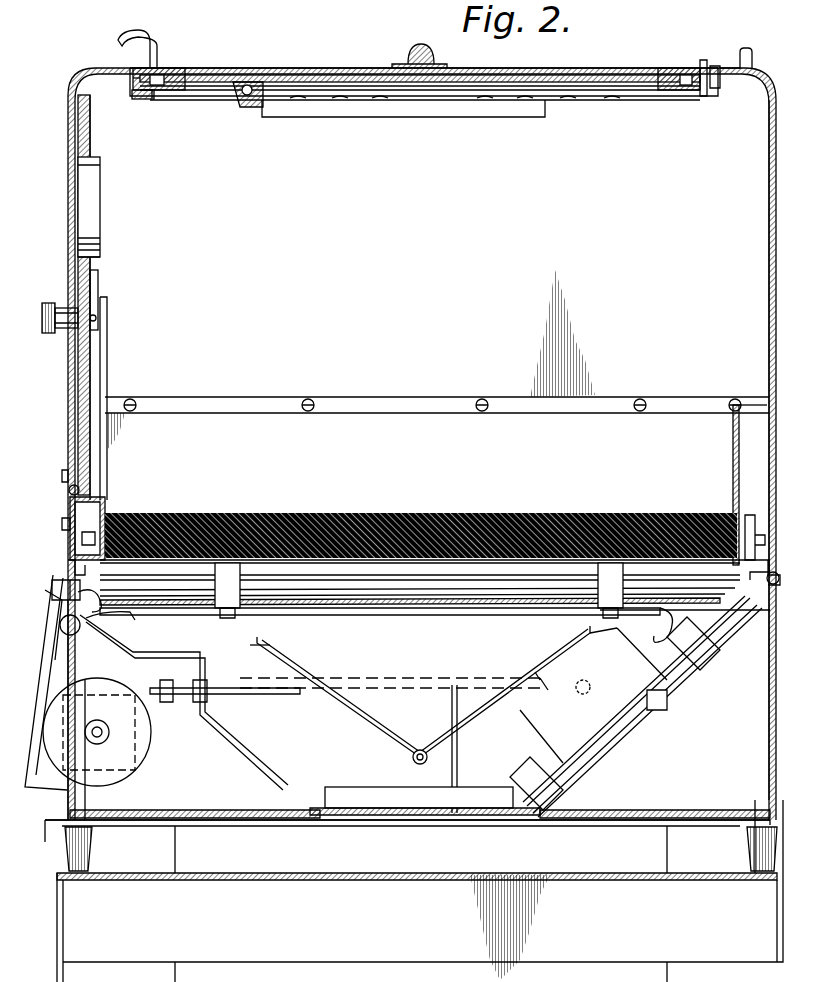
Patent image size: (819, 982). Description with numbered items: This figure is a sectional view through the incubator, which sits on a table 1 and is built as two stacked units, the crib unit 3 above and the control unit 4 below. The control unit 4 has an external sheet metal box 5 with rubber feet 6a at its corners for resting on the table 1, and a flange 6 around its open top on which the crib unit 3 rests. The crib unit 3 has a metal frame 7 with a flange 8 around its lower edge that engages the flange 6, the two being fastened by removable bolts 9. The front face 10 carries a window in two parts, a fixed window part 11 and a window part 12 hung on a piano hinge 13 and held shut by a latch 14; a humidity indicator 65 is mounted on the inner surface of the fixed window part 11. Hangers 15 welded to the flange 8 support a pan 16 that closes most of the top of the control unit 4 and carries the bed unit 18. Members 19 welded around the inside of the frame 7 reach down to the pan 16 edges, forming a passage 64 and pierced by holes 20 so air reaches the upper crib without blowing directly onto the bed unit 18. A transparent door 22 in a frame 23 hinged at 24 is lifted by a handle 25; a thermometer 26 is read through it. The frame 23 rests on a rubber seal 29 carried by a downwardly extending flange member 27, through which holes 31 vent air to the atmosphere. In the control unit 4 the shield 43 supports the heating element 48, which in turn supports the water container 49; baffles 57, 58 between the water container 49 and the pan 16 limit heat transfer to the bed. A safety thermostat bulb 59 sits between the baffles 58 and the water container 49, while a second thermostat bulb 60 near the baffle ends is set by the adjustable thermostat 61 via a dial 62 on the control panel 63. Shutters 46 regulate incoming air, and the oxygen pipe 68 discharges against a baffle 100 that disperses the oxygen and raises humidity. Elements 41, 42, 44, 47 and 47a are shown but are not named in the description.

The table 1 is at (70, 935).
The crib unit 3 is at (80, 70).
The control unit 4 is at (690, 790).
The external sheet metal box 5 is at (769, 688).
The flange 6 is at (70, 562).
The rubber feet 6a is at (95, 845).
The metal frame 7 is at (767, 476).
The flange 8 is at (764, 545).
The bolts 9 is at (768, 578).
The front face 10 is at (78, 430).
The window part 11 is at (85, 277).
The window part 12 is at (90, 440).
The piano hinge 13 is at (68, 490).
The latch 14 is at (42, 313).
The hangers 15 is at (107, 502).
The pan 16 is at (184, 590).
The bed unit 18 is at (432, 513).
The members 19 is at (735, 458).
The holes 20 is at (752, 406).
The transparent door 22 is at (605, 76).
The frame 23 is at (185, 72).
The hinge 24 is at (705, 62).
The handle 25 is at (157, 42).
The thermometer 26 is at (246, 106).
The downwardly extending flange member 27 is at (134, 96).
The rubber seal 29 is at (150, 96).
The holes 31 is at (132, 80).
The frame bar 41 is at (756, 615).
The mounting plate 42 is at (375, 800).
The shield 43 is at (566, 786).
The frame arm 44 is at (312, 795).
The shutters 46 is at (398, 822).
The bottom plate 47 is at (246, 820).
The post 47a is at (432, 800).
The heating element 48 is at (262, 688).
The water container 49 is at (366, 722).
The baffles 57 is at (310, 600).
The baffles 58 is at (350, 608).
The safety thermostat bulb 59 is at (602, 622).
The second thermostat bulb 60 is at (55, 595).
The adjustable thermostat 61 is at (150, 745).
The dial 62 is at (118, 780).
The control panel 63 is at (40, 793).
The passage 64 is at (757, 443).
The humidity indicator 65 is at (98, 213).
The pipe 68 is at (578, 695).
The baffle 100 is at (610, 738).